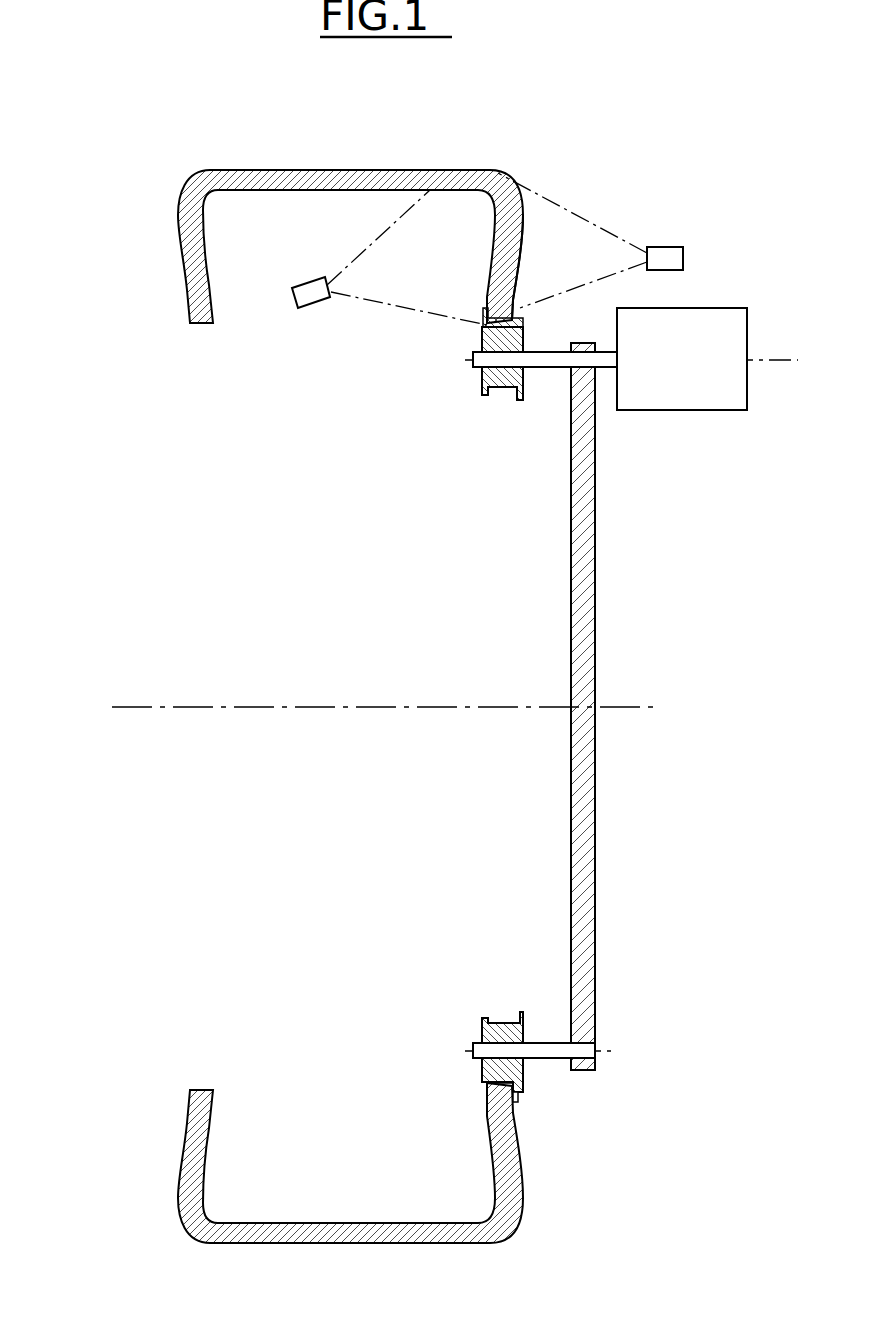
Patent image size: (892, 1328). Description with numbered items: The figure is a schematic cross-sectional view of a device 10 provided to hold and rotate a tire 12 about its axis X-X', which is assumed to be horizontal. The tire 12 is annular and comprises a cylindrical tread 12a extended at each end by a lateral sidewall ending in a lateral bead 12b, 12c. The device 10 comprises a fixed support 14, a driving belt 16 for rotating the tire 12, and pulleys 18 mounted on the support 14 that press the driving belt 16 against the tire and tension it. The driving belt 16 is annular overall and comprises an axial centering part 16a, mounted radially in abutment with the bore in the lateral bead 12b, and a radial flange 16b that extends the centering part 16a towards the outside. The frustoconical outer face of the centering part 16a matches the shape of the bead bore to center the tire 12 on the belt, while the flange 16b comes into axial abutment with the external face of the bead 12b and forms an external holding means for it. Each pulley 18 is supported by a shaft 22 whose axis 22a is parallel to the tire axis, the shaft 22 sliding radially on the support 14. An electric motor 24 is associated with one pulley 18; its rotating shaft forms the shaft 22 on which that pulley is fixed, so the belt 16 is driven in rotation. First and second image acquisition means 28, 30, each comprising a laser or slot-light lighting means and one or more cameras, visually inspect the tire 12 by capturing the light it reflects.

The device 10 is at (678, 618).
The tire 12 is at (350, 161).
The cylindrical tread 12a is at (295, 189).
The lateral bead 12b is at (494, 312).
The lateral bead 12c is at (200, 315).
The fixed support 14 is at (604, 590).
The driving belt 16 is at (617, 702).
The axial centering part 16a is at (507, 1115).
The radial flange 16b is at (520, 1098).
The pulley 18 is at (500, 382).
The shaft 22 is at (547, 363).
The axis 22a is at (780, 358).
The electric motor 24 is at (696, 352).
The first image acquisition means 28 is at (310, 297).
The second image acquisition means 30 is at (665, 249).